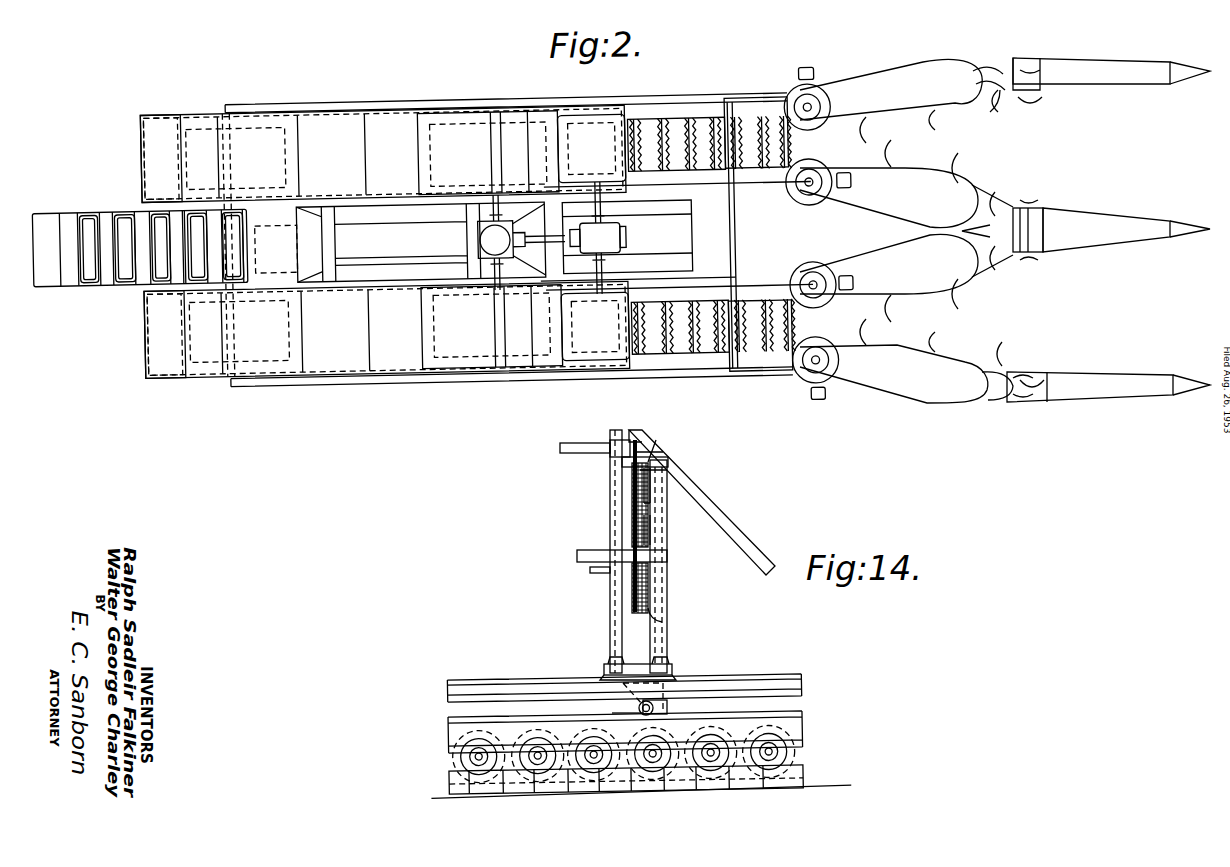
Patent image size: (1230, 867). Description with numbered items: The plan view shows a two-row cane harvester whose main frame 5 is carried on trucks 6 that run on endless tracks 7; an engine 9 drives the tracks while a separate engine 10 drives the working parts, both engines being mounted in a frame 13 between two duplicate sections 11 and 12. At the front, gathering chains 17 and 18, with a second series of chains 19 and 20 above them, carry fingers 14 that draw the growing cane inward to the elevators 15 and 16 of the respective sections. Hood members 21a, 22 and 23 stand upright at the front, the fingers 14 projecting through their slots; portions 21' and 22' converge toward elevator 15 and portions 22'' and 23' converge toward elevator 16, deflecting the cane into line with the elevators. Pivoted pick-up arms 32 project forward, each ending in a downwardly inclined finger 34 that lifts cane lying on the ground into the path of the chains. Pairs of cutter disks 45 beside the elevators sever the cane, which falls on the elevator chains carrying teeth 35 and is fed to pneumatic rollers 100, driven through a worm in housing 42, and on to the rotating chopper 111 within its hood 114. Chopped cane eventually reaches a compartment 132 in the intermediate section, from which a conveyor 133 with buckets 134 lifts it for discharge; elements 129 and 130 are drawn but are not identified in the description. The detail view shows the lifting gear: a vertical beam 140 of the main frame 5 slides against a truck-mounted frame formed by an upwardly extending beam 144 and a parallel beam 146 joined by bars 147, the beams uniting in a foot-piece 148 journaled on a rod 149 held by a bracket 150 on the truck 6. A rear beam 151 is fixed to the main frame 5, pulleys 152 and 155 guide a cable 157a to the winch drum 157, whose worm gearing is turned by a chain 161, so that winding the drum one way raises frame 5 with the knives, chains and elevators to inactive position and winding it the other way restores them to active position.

In FIG. 2, the main frame 5 is at (276, 99).
In FIG. 14, the main frame 5 is at (745, 677).
In FIG. 14, the truck 6 is at (793, 722).
In FIG. 14, the endless track 7 is at (800, 779).
In FIG. 2, the engine 9 is at (421, 242).
In FIG. 2, the engine 10 is at (627, 237).
In FIG. 2, the section 11 is at (730, 290).
In FIG. 2, the section 12 is at (728, 190).
In FIG. 2, the frame 13 is at (507, 232).
In FIG. 2, the finger 14 is at (1028, 82).
In FIG. 2, the elevator 15 is at (753, 350).
In FIG. 2, the elevator 16 is at (754, 125).
In FIG. 2, the gathering chain 17 is at (1003, 270).
In FIG. 2, the gathering chain 18 is at (993, 96).
In FIG. 2, the gathering chain 19 is at (893, 301).
In FIG. 2, the gathering chain 20 is at (893, 165).
In FIG. 2, the converging portion 21' is at (897, 368).
In FIG. 2, the hood member 21a is at (977, 400).
In FIG. 2, the hood member 22 is at (974, 259).
In FIG. 2, the converging portion 22' is at (906, 259).
In FIG. 2, the converging portion 22'' is at (906, 187).
In FIG. 2, the hood member 23 is at (989, 70).
In FIG. 2, the converging portion 23' is at (891, 76).
In FIG. 2, the pick-up arm 32 is at (1115, 62).
In FIG. 2, the finger 34 is at (1178, 66).
In FIG. 2, the teeth 35 is at (695, 140).
In FIG. 2, the housing 42 is at (613, 230).
In FIG. 2, the cutter disk 45 is at (823, 104).
In FIG. 2, the roller 100 is at (617, 132).
In FIG. 2, the chopper 111 is at (436, 112).
In FIG. 2, the hood 114 is at (508, 130).
In FIG. 2, the carriage 129 is at (343, 127).
In FIG. 2, the end housing 130 is at (152, 133).
In FIG. 2, the compartment 132 is at (288, 245).
In FIG. 2, the conveyor 133 is at (69, 271).
In FIG. 2, the bucket 134 is at (120, 206).
In FIG. 14, the vertical beam 140 is at (660, 612).
In FIG. 14, the upwardly extending beam 144 is at (667, 572).
In FIG. 14, the beam 146 is at (627, 472).
In FIG. 14, the bar 147 is at (650, 452).
In FIG. 14, the foot-piece 148 is at (633, 700).
In FIG. 14, the rod 149 is at (667, 708).
In FIG. 14, the bracket 150 is at (633, 712).
In FIG. 14, the upwardly extending beam 151 is at (612, 605).
In FIG. 14, the pulley 152 is at (648, 620).
In FIG. 14, the pulley 155 is at (626, 445).
In FIG. 14, the winch 157 is at (630, 484).
In FIG. 14, the cable 157a is at (638, 494).
In FIG. 14, the chain 161 is at (630, 573).